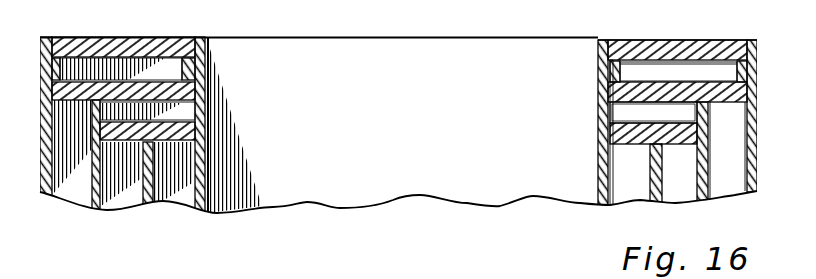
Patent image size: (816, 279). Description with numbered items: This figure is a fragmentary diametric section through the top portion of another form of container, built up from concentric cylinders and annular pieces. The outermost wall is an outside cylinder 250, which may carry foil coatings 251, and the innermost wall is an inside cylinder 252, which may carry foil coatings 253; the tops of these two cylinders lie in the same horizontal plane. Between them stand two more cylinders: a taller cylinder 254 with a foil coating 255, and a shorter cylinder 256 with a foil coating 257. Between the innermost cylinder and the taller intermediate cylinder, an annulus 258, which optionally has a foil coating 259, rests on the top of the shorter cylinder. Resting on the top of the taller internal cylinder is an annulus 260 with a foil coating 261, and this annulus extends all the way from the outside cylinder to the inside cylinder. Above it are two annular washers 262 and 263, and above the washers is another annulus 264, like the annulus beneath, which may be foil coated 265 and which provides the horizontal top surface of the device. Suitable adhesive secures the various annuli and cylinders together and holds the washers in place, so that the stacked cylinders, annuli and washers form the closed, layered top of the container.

The outside cylinder 250 is at (748, 189).
The foil coatings 251 is at (739, 183).
The inside cylinder 252 is at (607, 205).
The foil coatings 253 is at (602, 176).
The cylinder 254 is at (700, 170).
The foil coating 255 is at (712, 165).
The cylinder 256 is at (160, 193).
The foil coating 257 is at (157, 197).
The annulus 258 is at (622, 134).
The foil coating 259 is at (623, 148).
The annulus 260 is at (627, 93).
The foil coating 261 is at (623, 105).
The annular washer 262 is at (622, 73).
The annular washer 263 is at (765, 38).
The annulus 264 is at (672, 49).
The foil coating 265 is at (645, 65).